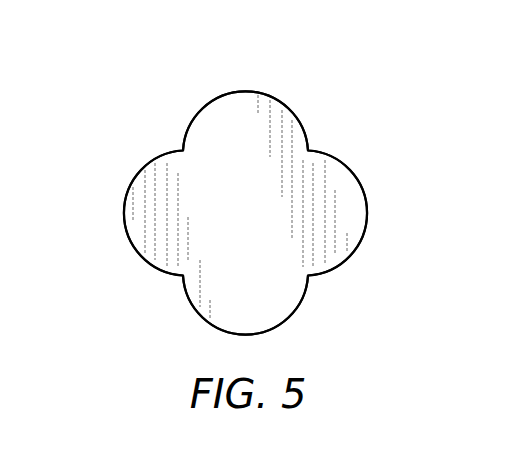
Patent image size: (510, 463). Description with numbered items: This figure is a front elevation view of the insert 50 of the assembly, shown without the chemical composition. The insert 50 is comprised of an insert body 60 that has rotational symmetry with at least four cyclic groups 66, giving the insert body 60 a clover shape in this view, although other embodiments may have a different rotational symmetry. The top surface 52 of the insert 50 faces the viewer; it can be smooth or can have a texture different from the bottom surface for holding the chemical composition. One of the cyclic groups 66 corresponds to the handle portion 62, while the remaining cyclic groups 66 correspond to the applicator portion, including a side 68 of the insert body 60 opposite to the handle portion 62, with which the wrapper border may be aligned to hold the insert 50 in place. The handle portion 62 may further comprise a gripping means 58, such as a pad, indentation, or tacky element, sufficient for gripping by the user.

The insert 50 is at (188, 122).
The top surface 52 is at (145, 183).
The gripping means 58 is at (260, 317).
The insert body 60 is at (222, 92).
The handle portion 62 is at (203, 323).
The cyclic groups 66 is at (248, 100).
The side 68 is at (342, 157).